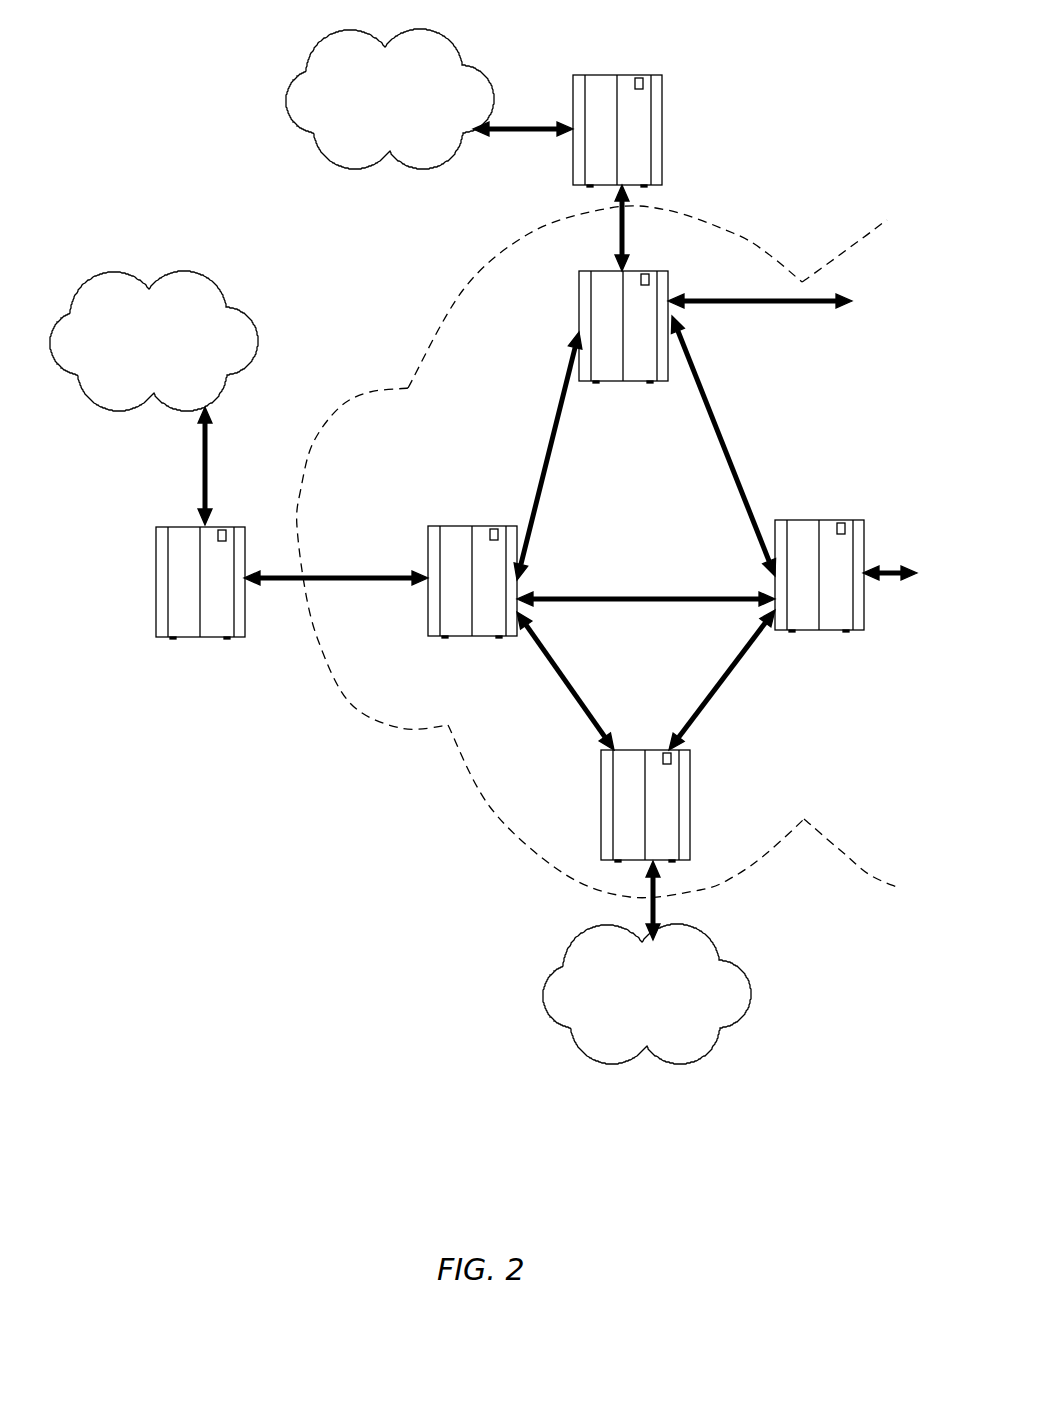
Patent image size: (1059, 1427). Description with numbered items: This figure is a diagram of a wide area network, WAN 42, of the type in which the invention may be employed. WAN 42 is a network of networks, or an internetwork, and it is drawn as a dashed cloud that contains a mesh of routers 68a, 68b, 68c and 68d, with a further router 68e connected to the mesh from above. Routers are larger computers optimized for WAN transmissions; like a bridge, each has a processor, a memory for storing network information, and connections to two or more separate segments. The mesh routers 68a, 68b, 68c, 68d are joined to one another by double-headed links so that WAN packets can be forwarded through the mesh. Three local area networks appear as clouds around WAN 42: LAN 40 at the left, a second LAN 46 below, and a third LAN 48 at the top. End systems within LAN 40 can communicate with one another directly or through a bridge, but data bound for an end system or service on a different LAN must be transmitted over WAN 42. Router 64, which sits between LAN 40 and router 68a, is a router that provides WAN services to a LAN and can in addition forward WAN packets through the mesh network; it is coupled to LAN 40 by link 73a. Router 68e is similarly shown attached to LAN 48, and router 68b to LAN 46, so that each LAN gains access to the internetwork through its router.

The LAN 40 is at (194, 274).
The WAN 42 is at (874, 769).
The second local area network (LAN2) 46 is at (688, 926).
The third local area network (LAN3) 48 is at (428, 28).
The router 64 is at (156, 548).
The router 68a is at (428, 548).
The router 68b is at (601, 771).
The router 68c is at (775, 591).
The router 68d is at (579, 293).
The router 68e is at (573, 96).
The communication link between LAN1 and router 64 73a is at (210, 478).